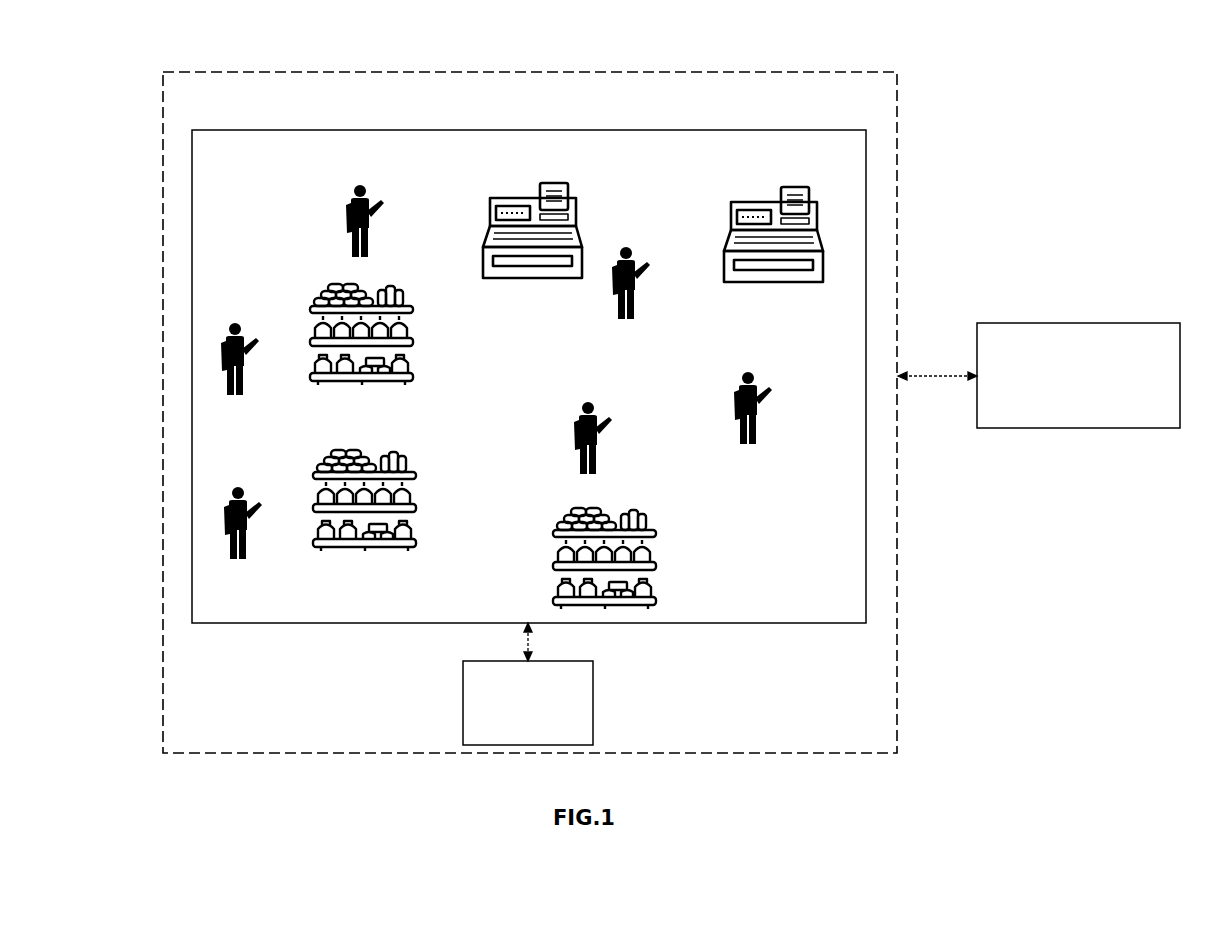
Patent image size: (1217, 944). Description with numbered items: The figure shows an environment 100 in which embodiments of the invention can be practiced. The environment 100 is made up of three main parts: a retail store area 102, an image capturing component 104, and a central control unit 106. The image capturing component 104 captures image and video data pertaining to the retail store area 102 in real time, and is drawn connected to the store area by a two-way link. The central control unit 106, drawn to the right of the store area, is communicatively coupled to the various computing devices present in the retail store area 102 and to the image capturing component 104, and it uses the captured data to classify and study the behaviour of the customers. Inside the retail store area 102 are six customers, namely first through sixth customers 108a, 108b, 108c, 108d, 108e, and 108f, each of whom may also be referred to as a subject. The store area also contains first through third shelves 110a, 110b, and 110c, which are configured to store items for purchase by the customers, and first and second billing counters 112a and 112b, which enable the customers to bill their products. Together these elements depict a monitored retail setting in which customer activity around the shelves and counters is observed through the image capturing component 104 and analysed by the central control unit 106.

The environment 100 is at (110, 680).
The retail store area 102 is at (742, 130).
The image capturing component 104 is at (594, 706).
The central control unit 106 is at (1093, 322).
The first customer 108a is at (240, 322).
The second customer 108b is at (366, 187).
The third customer 108c is at (243, 487).
The fourth customer 108d is at (631, 247).
The fifth customer 108e is at (593, 402).
The sixth customer 108f is at (753, 372).
The first shelf 110a is at (656, 532).
The second shelf 110b is at (417, 472).
The third shelf 110c is at (412, 333).
The first billing counter 112a is at (560, 184).
The second billing counter 112b is at (800, 188).